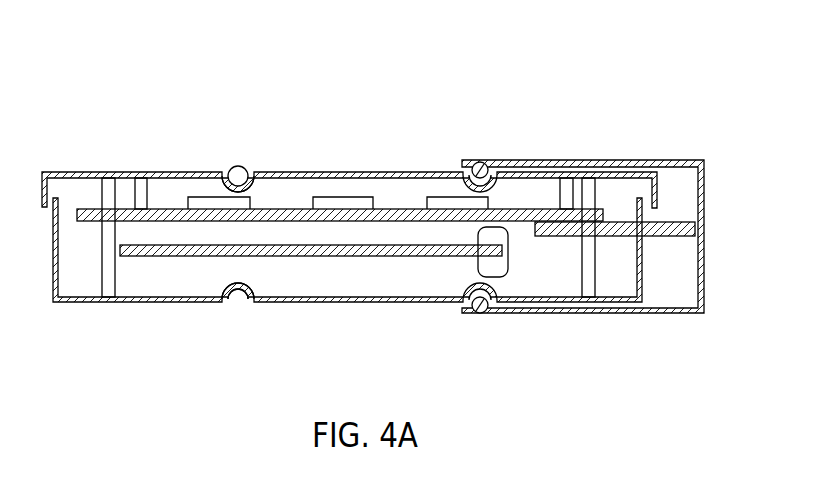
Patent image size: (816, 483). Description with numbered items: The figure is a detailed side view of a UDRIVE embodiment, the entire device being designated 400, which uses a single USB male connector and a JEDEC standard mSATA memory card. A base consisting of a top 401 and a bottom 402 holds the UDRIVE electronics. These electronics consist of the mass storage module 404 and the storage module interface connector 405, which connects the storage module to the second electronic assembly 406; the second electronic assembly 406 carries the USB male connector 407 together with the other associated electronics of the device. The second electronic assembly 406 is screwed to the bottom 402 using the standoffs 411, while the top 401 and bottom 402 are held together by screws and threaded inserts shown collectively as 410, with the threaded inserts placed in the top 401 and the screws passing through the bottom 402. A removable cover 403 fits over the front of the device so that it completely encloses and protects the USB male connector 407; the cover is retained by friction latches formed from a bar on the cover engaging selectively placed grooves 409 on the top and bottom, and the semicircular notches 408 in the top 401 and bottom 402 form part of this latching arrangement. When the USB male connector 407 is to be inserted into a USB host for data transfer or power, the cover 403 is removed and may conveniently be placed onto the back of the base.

The UDRIVE device 400 is at (482, 98).
The top 401 is at (90, 172).
The bottom 402 is at (64, 301).
The cover 403 is at (677, 160).
The mass storage module 404 is at (162, 258).
The storage module interface connector 405 is at (508, 262).
The second electronic assembly 406 is at (172, 210).
The USB male connector 407 is at (661, 237).
The mounting notches 408 is at (448, 165).
The friction latch groove 409 is at (479, 163).
The screws and threaded inserts 410 is at (87, 292).
The standoffs 411 is at (143, 182).